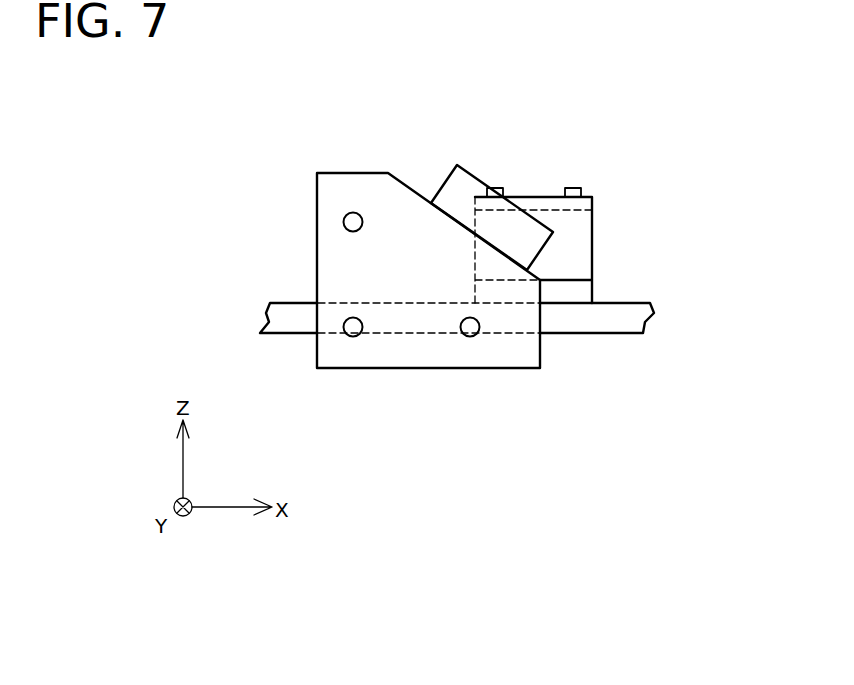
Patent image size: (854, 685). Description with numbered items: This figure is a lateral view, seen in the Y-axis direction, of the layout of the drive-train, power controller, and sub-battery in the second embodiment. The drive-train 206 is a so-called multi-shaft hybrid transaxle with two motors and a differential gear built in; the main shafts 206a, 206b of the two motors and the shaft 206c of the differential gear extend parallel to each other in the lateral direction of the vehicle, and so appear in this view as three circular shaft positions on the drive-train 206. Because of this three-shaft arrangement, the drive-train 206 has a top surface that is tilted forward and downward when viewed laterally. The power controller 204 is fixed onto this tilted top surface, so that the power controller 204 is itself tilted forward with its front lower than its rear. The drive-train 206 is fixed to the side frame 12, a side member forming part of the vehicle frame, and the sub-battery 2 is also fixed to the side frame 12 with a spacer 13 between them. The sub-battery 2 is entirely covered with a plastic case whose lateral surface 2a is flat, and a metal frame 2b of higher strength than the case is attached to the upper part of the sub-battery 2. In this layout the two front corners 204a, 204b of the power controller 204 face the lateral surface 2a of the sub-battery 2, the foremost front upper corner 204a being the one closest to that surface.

The sub-battery 2 is at (528, 197).
The lateral surface 2a is at (577, 258).
The metal frame 2b is at (578, 203).
The side frame 12 is at (638, 322).
The spacer 13 is at (577, 287).
The power controller 204 is at (450, 188).
The front upper corner 204a is at (556, 231).
The front corner 204b is at (532, 268).
The drive-train 206 is at (351, 183).
The main shaft 206a is at (343, 222).
The main shaft 206b is at (348, 337).
The shaft of the differential gear 206c is at (468, 337).